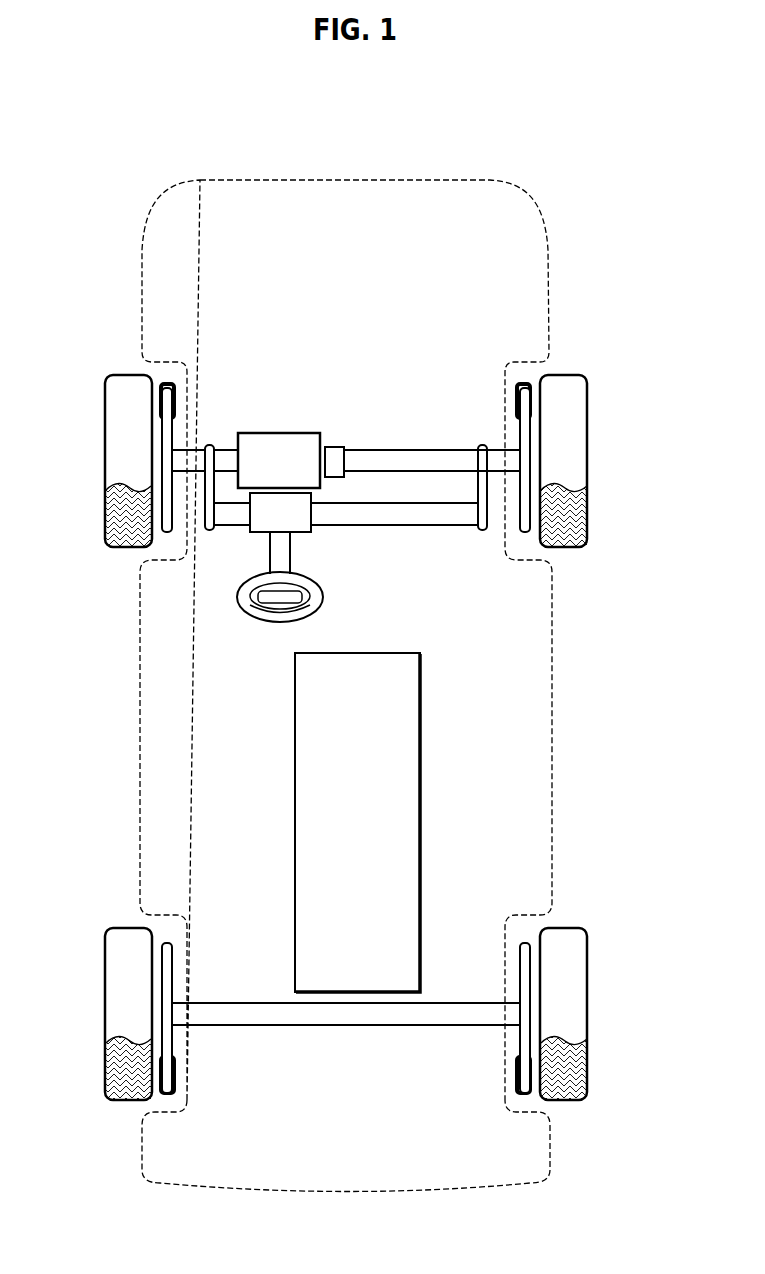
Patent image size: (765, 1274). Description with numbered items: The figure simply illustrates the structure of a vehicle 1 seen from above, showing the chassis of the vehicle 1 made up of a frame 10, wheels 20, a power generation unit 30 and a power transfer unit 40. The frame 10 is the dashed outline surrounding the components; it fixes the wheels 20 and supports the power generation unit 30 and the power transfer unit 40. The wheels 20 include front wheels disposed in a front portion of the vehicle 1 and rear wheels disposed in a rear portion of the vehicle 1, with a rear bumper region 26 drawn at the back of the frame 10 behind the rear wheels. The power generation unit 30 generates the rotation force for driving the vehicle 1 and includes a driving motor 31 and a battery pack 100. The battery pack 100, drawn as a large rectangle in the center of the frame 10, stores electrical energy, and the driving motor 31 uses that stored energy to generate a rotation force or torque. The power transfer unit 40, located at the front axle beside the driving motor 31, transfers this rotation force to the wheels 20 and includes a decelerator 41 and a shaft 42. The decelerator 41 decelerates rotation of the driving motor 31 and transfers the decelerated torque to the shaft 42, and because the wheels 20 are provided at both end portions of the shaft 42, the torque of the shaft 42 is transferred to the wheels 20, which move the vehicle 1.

The vehicle 1 is at (553, 158).
The frame 10 is at (351, 192).
The wheels 20 is at (105, 511).
The rear bumper 26 is at (142, 1151).
The power generation unit 30 is at (279, 429).
The driving motor 31 is at (278, 433).
The power transfer unit 40 is at (420, 478).
The decelerator 41 is at (333, 480).
The shaft 42 is at (408, 458).
The battery pack 100 is at (420, 810).